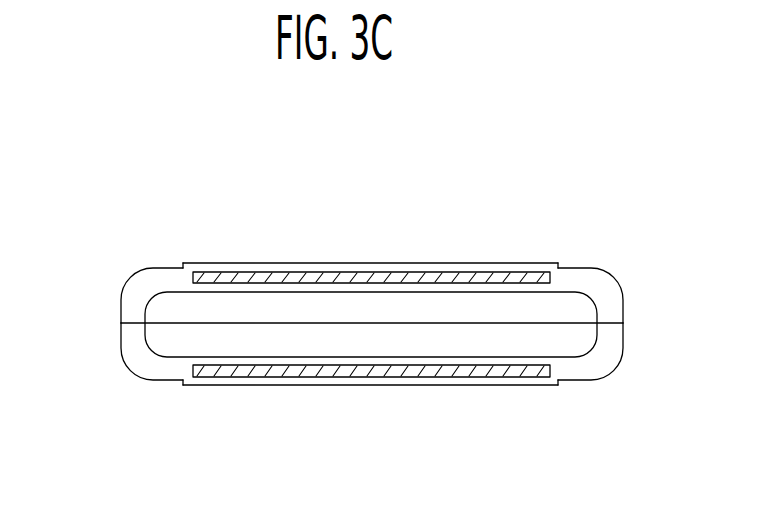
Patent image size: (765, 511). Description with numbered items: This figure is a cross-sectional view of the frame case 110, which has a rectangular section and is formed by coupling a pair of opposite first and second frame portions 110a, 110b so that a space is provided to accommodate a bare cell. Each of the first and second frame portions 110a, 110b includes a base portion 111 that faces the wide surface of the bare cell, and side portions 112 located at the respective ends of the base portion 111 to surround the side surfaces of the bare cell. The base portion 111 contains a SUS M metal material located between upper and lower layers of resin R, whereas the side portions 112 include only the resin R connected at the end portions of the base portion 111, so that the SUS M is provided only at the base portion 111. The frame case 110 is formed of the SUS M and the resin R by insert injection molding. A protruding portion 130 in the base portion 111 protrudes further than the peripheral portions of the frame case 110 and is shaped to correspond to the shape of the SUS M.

The frame case 110 is at (580, 162).
The first frame portion 110a is at (624, 414).
The second frame portion 110b is at (592, 253).
The base portion 111 is at (376, 252).
The side portion 112 is at (123, 293).
The protruding portion 130 is at (180, 387).
The resin R is at (143, 367).
The SUS metal M is at (278, 372).